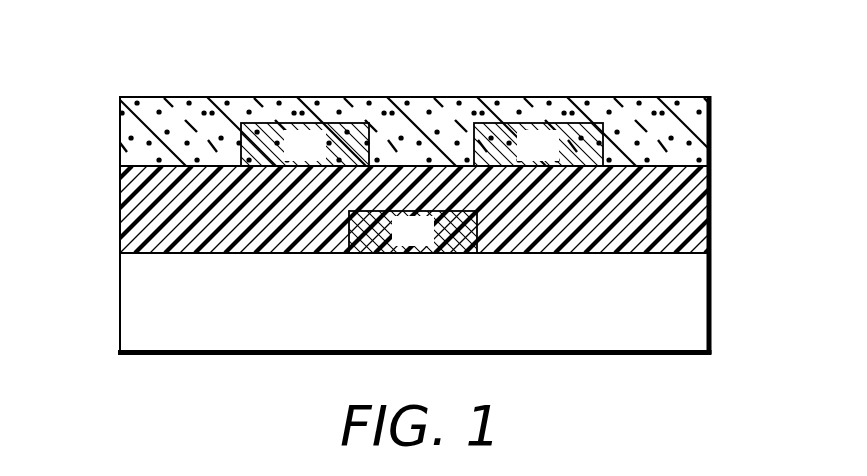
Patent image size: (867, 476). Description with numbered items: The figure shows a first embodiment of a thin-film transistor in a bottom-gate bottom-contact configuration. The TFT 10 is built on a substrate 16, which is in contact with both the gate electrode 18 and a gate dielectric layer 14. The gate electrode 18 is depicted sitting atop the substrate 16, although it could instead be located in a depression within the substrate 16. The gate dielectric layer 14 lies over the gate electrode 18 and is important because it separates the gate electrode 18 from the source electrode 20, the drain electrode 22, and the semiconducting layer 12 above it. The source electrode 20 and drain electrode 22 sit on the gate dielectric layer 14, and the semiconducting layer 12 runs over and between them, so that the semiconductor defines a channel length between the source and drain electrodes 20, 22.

The TFT 10 is at (149, 47).
The semiconducting layer 12 is at (698, 130).
The gate dielectric layer 14 is at (110, 165).
The substrate 16 is at (700, 300).
The gate electrode 18 is at (429, 242).
The source electrode 20 is at (321, 158).
The drain electrode 22 is at (554, 158).